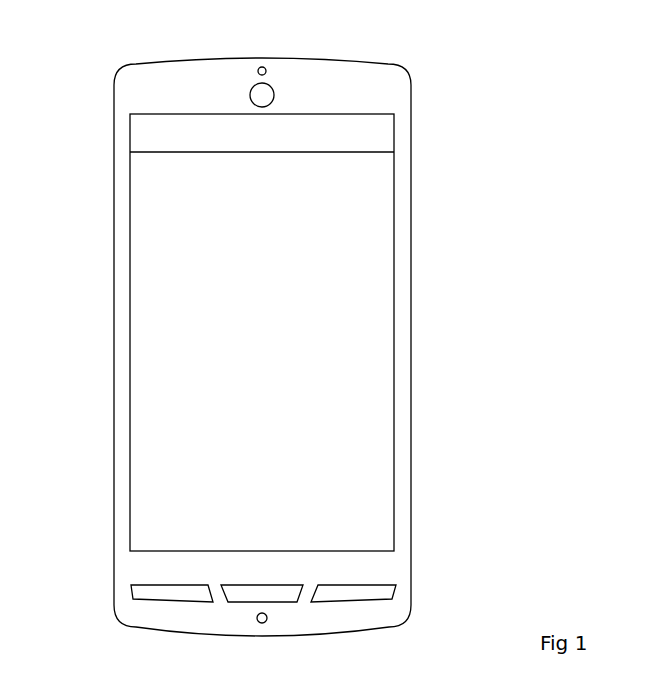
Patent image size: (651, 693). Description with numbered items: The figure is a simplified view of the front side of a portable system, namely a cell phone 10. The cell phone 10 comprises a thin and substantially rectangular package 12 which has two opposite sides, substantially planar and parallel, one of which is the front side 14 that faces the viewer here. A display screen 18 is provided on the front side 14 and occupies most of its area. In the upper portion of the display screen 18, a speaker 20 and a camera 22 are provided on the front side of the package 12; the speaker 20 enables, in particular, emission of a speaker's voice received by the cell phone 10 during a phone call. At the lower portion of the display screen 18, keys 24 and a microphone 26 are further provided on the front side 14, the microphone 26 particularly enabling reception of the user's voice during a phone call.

The cell phone 10 is at (276, 350).
The package 12 is at (133, 82).
The front side 14 is at (366, 95).
The display screen 18 is at (155, 245).
The speaker 20 is at (268, 72).
The camera 22 is at (266, 95).
The keys 24 is at (283, 598).
The microphone 26 is at (262, 624).